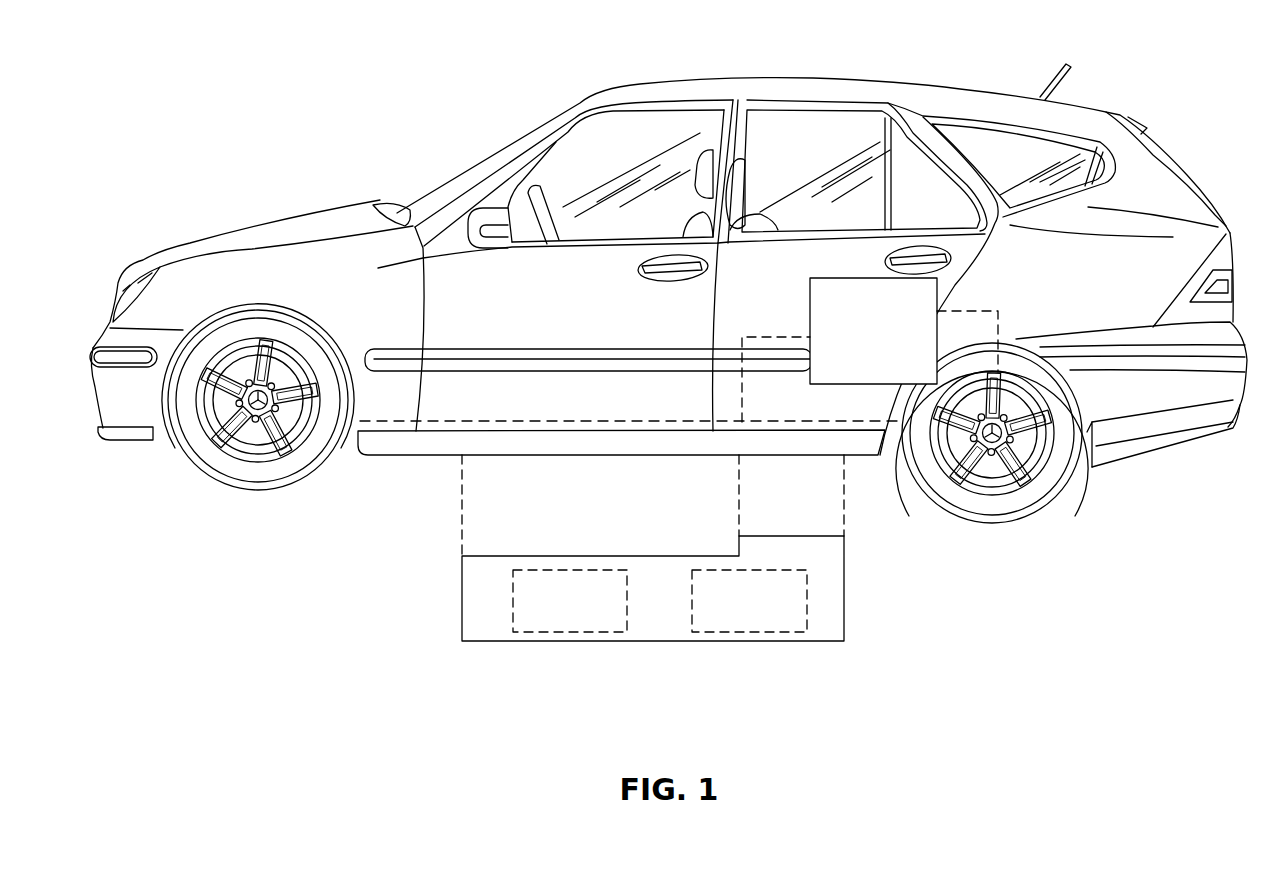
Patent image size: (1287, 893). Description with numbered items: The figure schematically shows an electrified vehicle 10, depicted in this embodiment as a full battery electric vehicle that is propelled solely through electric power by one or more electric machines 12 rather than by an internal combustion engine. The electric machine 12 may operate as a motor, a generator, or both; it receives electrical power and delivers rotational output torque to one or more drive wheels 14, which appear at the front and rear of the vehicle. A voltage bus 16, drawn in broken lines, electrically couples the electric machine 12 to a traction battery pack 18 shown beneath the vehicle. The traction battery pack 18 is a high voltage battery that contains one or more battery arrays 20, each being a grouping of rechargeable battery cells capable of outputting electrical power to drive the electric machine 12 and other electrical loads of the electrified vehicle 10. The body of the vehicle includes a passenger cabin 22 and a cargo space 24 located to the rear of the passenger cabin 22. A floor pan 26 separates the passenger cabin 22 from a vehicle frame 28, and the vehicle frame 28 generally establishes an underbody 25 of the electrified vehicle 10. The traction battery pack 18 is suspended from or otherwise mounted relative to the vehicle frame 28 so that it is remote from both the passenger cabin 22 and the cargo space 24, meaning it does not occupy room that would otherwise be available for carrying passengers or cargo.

The electrified vehicle 10 is at (1143, 101).
The electric machine 12 is at (888, 345).
The drive wheels 14 is at (255, 486).
The voltage bus 16 is at (789, 336).
The traction battery pack 18 is at (652, 643).
The battery arrays 20 is at (557, 613).
The passenger cabin 22 is at (643, 143).
The cargo space 24 is at (1163, 162).
The underbody 25 is at (434, 486).
The floor pan 26 is at (538, 420).
The vehicle frame 28 is at (629, 453).